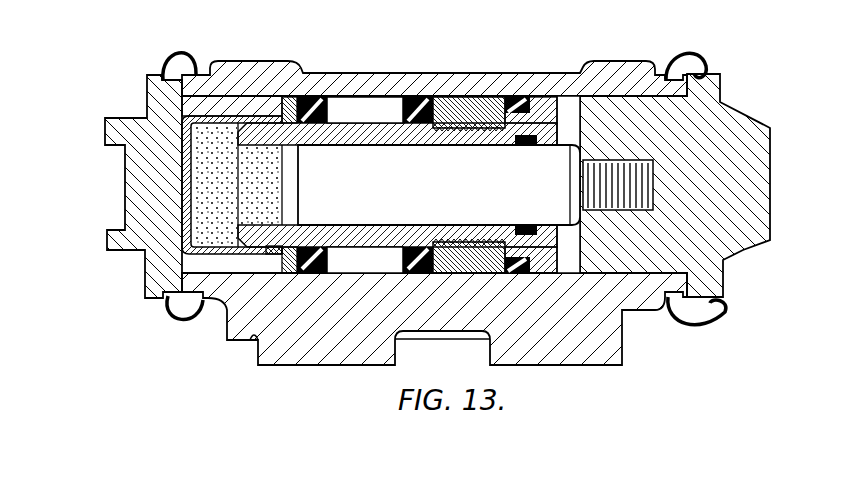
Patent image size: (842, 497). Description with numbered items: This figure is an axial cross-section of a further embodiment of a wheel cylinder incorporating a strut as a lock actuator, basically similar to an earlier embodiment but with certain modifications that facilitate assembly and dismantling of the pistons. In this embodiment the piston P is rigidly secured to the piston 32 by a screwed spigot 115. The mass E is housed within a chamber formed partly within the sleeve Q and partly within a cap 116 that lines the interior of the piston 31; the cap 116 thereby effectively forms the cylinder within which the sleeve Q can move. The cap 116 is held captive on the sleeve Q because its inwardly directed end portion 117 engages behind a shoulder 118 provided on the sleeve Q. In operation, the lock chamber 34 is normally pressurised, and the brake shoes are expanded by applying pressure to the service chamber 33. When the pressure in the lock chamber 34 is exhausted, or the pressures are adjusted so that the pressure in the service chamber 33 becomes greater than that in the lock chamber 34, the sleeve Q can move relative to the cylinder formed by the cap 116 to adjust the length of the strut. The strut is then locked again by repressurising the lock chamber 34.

The piston 31 is at (135, 164).
The piston 32 is at (766, 149).
The service chamber 33 is at (568, 112).
The lock chamber 34 is at (383, 108).
The sleeve Q is at (356, 134).
The inwardly directed end portion 117 is at (281, 118).
The cap 116 is at (190, 224).
The mass E is at (203, 187).
The shoulder 118 is at (273, 254).
The piston P is at (400, 201).
The screwed spigot 115 is at (597, 187).